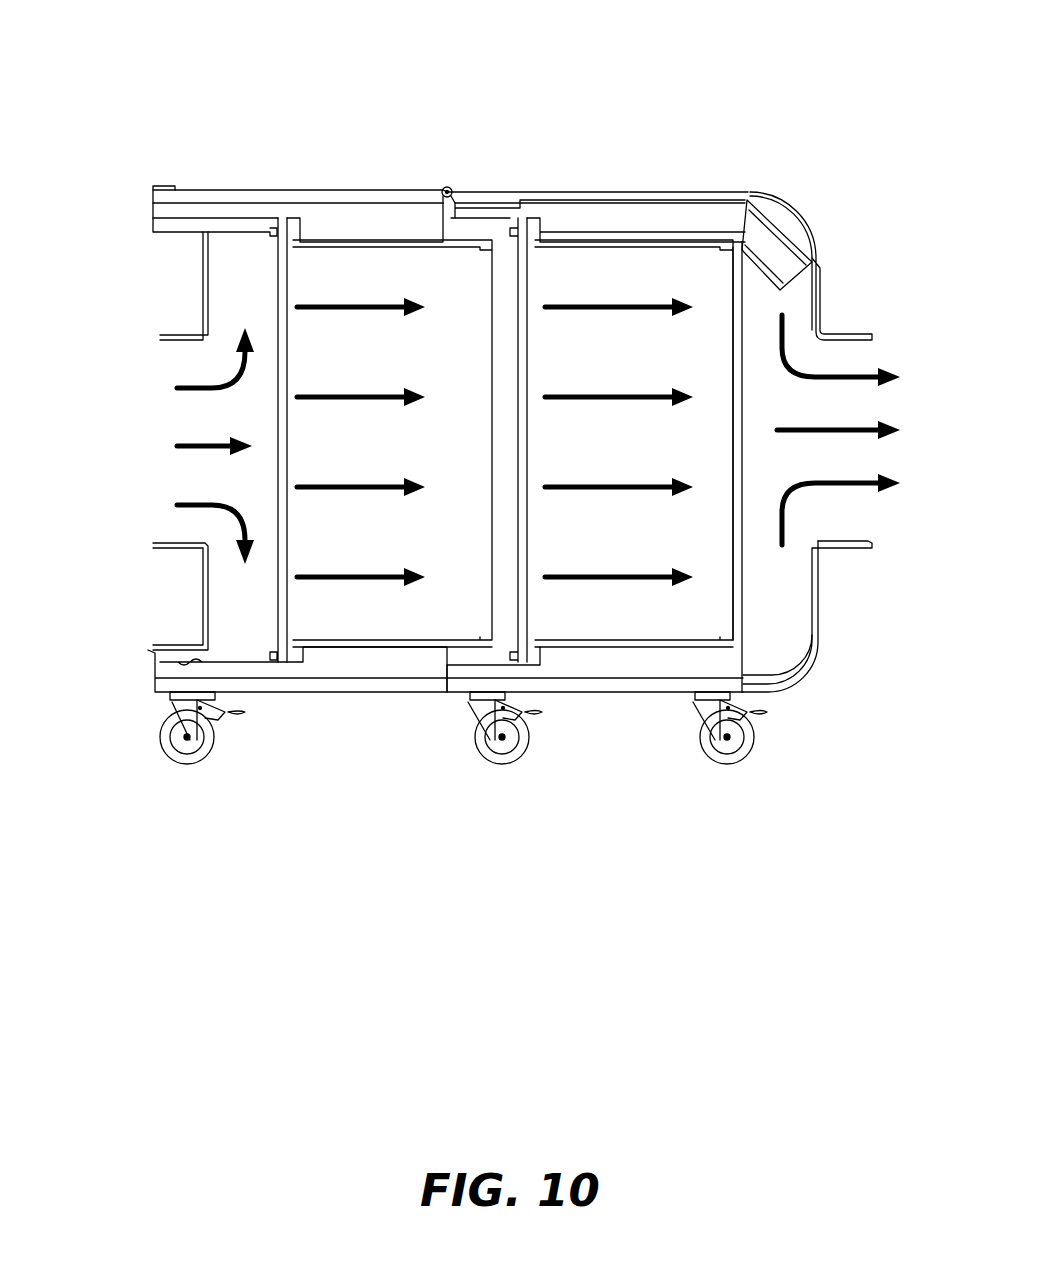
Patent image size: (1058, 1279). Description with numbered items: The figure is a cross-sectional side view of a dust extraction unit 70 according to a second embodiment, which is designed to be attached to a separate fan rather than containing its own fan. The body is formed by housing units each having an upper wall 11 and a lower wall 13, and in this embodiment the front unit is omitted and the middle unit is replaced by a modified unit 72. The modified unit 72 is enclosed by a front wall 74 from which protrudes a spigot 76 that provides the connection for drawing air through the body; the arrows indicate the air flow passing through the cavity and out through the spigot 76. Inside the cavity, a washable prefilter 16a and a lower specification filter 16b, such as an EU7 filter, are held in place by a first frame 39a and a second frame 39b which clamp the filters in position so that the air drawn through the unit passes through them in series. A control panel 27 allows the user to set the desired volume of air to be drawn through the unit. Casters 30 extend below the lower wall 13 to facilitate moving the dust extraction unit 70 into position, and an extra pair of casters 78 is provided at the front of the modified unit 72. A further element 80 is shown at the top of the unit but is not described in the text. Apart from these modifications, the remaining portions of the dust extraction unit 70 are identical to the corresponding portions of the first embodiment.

The dust extraction unit 70 is at (130, 108).
The first frame 39a is at (228, 212).
The top panel 80 is at (358, 188).
The upper wall 11 is at (281, 186).
The washable prefilter 16a is at (400, 268).
The second frame 39b is at (518, 226).
The lower specification filter 16b is at (596, 258).
The modified unit 72 is at (655, 190).
The control panel 27 is at (793, 226).
The front wall 74 is at (818, 306).
The spigot 76 is at (868, 418).
The lower wall 13 is at (284, 692).
The casters 30 is at (515, 757).
The extra pair of casters 78 is at (772, 752).